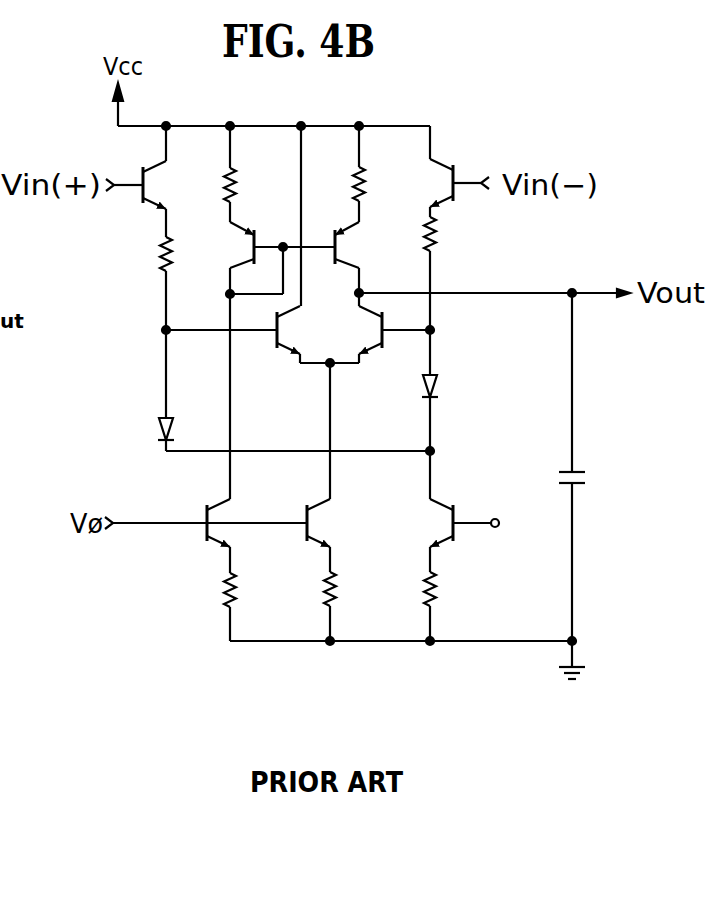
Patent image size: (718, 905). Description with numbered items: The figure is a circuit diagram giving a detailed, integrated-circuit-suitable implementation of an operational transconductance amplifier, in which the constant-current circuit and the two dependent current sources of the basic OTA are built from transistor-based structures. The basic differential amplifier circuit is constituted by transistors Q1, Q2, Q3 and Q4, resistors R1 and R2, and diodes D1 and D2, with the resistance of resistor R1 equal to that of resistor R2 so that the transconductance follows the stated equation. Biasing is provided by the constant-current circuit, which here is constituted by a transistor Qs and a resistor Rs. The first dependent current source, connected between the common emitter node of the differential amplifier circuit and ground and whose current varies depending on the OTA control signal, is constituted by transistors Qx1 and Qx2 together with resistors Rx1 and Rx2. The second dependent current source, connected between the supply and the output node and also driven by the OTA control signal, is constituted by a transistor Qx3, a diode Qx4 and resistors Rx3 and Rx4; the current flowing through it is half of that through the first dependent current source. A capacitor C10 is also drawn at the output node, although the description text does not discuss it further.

The transistor Q1 is at (166, 181).
The transistor Q2 is at (425, 171).
The transistor Q3 is at (231, 344).
The transistor Q4 is at (396, 344).
The transistor Qx1 is at (340, 535).
The transistor Qx2 is at (245, 536).
The transistor Qx3 is at (369, 264).
The diode Qx4 is at (257, 235).
The transistor Qs is at (471, 511).
The resistor R1 is at (146, 327).
The resistor R2 is at (452, 296).
The resistor Rx1 is at (353, 606).
The resistor Rx2 is at (256, 607).
The resistor Rx3 is at (338, 174).
The resistor Rx4 is at (254, 174).
The resistor Rs is at (452, 606).
The diode D1 is at (146, 436).
The diode D2 is at (453, 412).
The output capacitor C10 is at (604, 467).